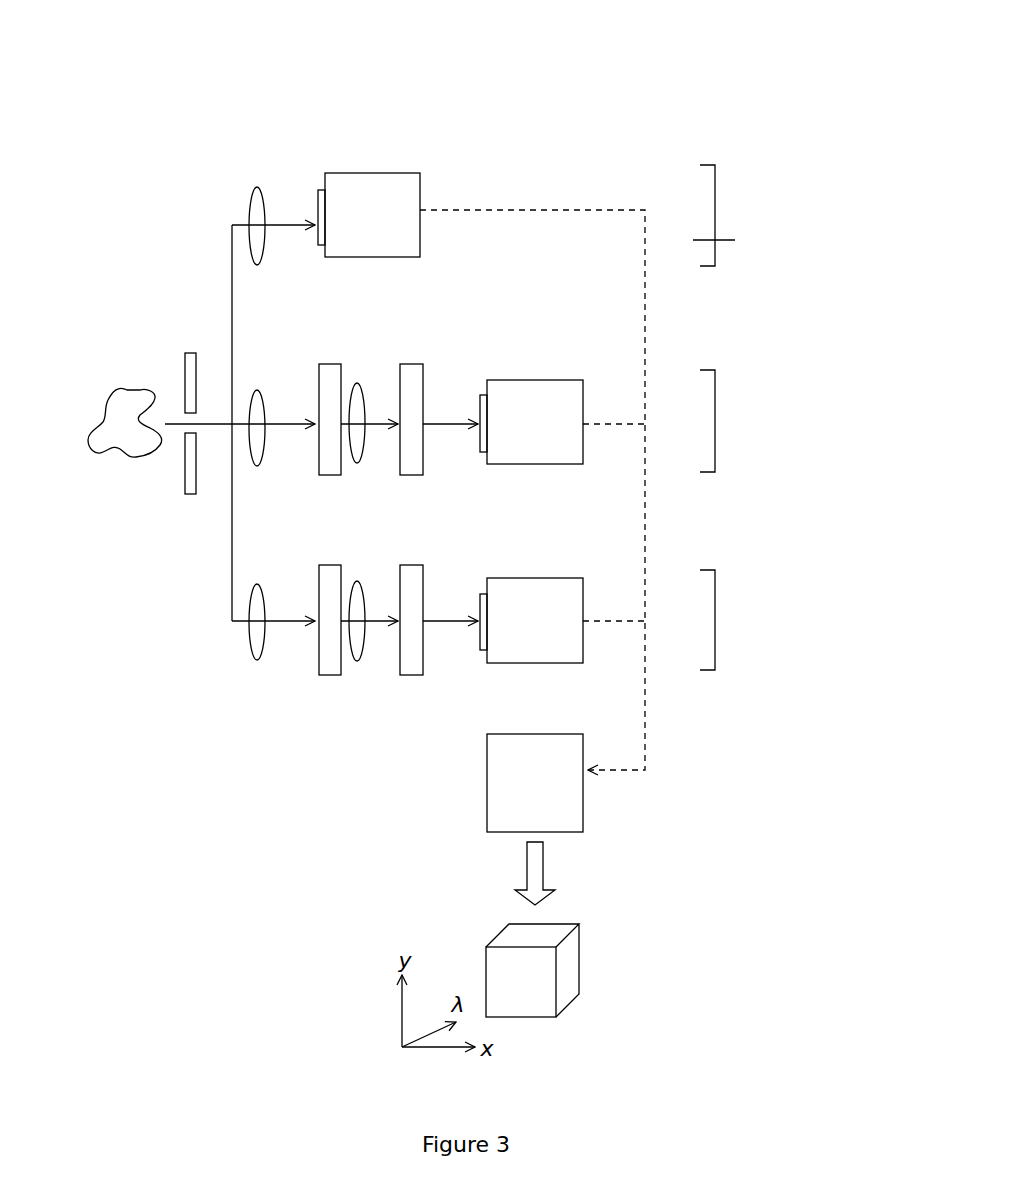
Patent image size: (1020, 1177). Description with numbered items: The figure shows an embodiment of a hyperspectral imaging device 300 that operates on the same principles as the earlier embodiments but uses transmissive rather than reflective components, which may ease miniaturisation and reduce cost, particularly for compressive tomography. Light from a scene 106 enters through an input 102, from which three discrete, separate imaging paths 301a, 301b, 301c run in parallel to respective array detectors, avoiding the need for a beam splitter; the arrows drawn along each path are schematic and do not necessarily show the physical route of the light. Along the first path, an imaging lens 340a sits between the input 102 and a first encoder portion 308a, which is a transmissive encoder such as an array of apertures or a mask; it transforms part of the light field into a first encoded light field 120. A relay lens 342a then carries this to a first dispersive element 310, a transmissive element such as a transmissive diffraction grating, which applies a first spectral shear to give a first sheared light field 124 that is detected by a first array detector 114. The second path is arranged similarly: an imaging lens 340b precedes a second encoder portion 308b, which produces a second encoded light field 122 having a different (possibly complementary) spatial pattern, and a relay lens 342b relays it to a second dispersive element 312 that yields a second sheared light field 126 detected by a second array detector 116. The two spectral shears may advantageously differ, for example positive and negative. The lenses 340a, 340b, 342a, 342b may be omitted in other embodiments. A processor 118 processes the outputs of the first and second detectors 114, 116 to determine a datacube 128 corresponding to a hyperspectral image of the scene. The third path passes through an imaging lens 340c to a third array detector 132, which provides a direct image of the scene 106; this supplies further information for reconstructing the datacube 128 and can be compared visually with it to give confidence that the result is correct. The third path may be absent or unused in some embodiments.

The hyperspectral imaging device 300 is at (554, 124).
The scene 106 is at (127, 390).
The input 102 is at (190, 353).
The imaging lens 340a is at (257, 390).
The imaging lens 340b is at (257, 584).
The imaging lens 340c is at (257, 187).
The third array detector 132 is at (369, 215).
The first encoder portion 308a is at (336, 364).
The second encoder portion 308b is at (328, 675).
The relay lens 342a is at (357, 383).
The relay lens 342b is at (357, 661).
The first dispersive element 310 is at (418, 364).
The second dispersive element 312 is at (408, 675).
The first encoded light field 120 is at (377, 426).
The second encoded light field 122 is at (378, 619).
The first sheared light field 124 is at (444, 424).
The second sheared light field 126 is at (446, 619).
The first array detector 114 is at (531, 422).
The second array detector 116 is at (531, 620).
The processor 118 is at (535, 783).
The datacube 128 is at (520, 1017).
The first discrete imaging path 301a is at (739, 215).
The second discrete imaging path 301b is at (743, 421).
The third discrete imaging path 301c is at (742, 620).